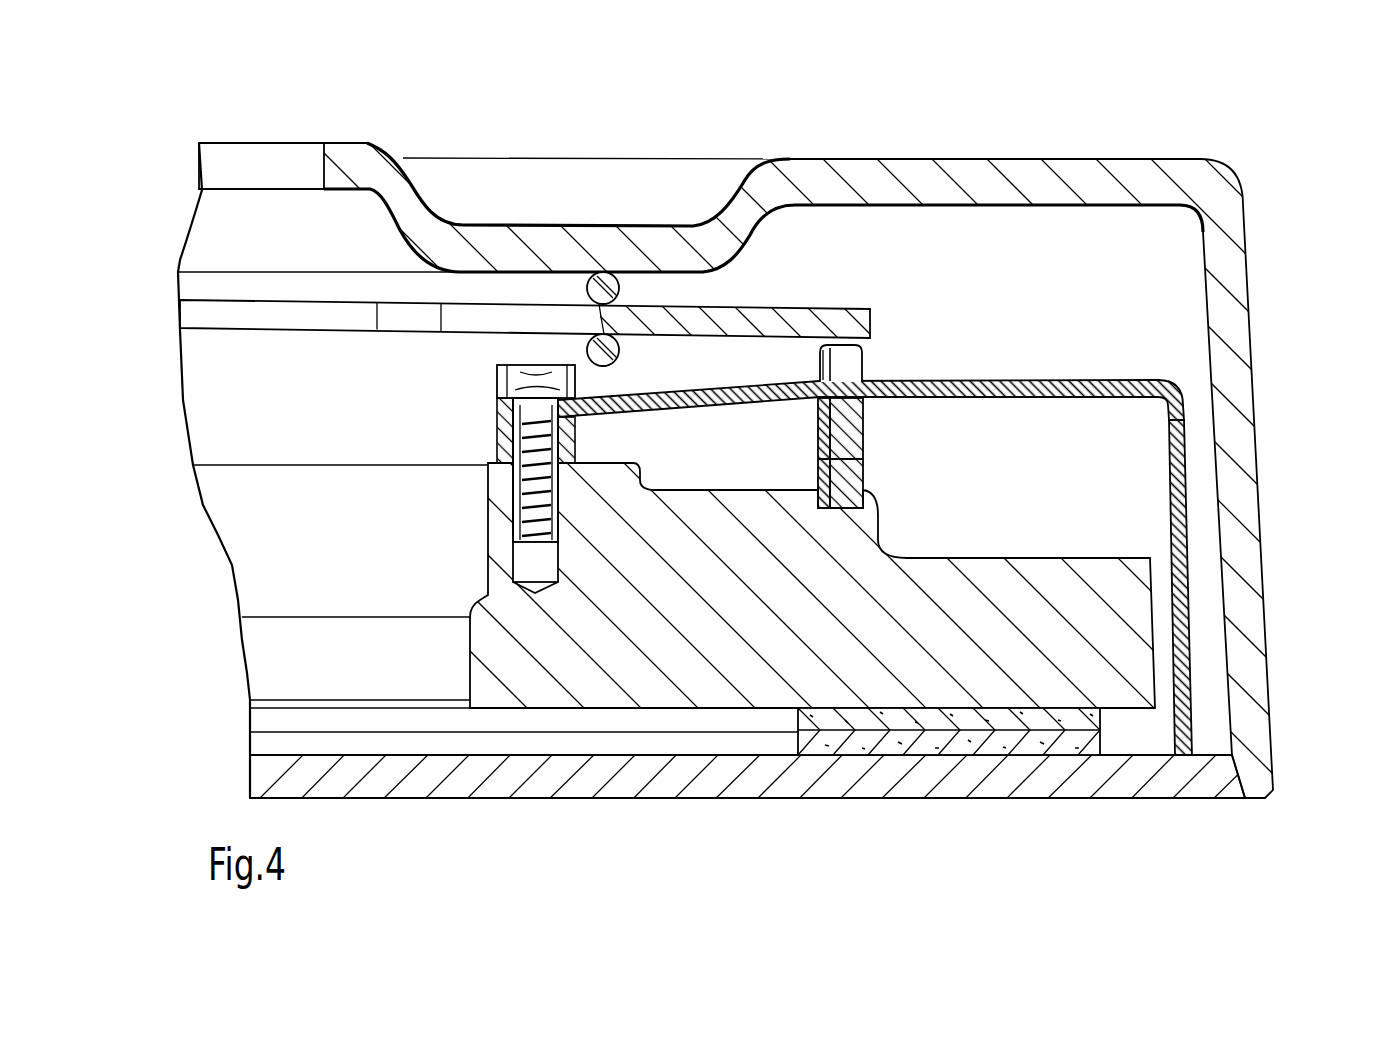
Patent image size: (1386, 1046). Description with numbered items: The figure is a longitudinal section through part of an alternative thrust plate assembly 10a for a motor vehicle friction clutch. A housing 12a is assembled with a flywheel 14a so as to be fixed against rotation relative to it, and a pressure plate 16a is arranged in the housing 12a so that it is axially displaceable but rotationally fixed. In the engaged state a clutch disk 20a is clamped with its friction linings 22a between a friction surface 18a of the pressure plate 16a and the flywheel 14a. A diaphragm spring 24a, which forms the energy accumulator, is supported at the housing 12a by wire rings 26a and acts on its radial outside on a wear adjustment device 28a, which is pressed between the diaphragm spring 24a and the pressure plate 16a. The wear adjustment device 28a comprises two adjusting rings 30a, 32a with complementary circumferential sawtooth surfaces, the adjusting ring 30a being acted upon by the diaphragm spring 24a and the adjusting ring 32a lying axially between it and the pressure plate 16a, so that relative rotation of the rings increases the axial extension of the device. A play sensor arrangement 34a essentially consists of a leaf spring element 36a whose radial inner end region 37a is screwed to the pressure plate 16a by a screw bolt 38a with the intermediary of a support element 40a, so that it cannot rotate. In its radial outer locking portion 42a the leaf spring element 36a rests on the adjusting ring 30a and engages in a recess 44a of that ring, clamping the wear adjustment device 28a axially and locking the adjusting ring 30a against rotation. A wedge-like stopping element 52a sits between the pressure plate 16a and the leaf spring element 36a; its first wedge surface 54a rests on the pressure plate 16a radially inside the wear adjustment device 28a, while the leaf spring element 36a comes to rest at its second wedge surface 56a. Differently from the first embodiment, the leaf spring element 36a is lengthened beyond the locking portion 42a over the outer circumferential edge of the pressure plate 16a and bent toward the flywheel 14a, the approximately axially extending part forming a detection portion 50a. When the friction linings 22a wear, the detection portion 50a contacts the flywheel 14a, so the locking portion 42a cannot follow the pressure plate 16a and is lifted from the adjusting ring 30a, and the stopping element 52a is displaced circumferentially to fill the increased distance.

The thrust plate assembly 10a is at (1097, 120).
The housing 12a is at (1228, 170).
The flywheel 14a is at (1133, 790).
The pressure plate 16a is at (1140, 653).
The friction surface 18a is at (1143, 708).
The clutch disk 20a is at (592, 733).
The friction linings 22a is at (1020, 727).
The diaphragm spring 24a is at (250, 320).
The wire rings 26a is at (600, 272).
The wear adjustment device 28a is at (985, 463).
The adjusting ring 30a is at (865, 433).
The adjusting ring 32a is at (865, 487).
The play sensor arrangement 34a is at (975, 313).
The leaf spring element 36a is at (933, 380).
The radial inner end region 37a is at (497, 404).
The screw bolt 38a is at (513, 508).
The support element 40a is at (497, 438).
The locking portion 42a is at (840, 373).
The recess 44a is at (853, 348).
The detection portion 50a is at (1190, 603).
The stopping element 52a is at (817, 440).
The first wedge surface 54a is at (826, 508).
The second wedge surface 56a is at (826, 381).